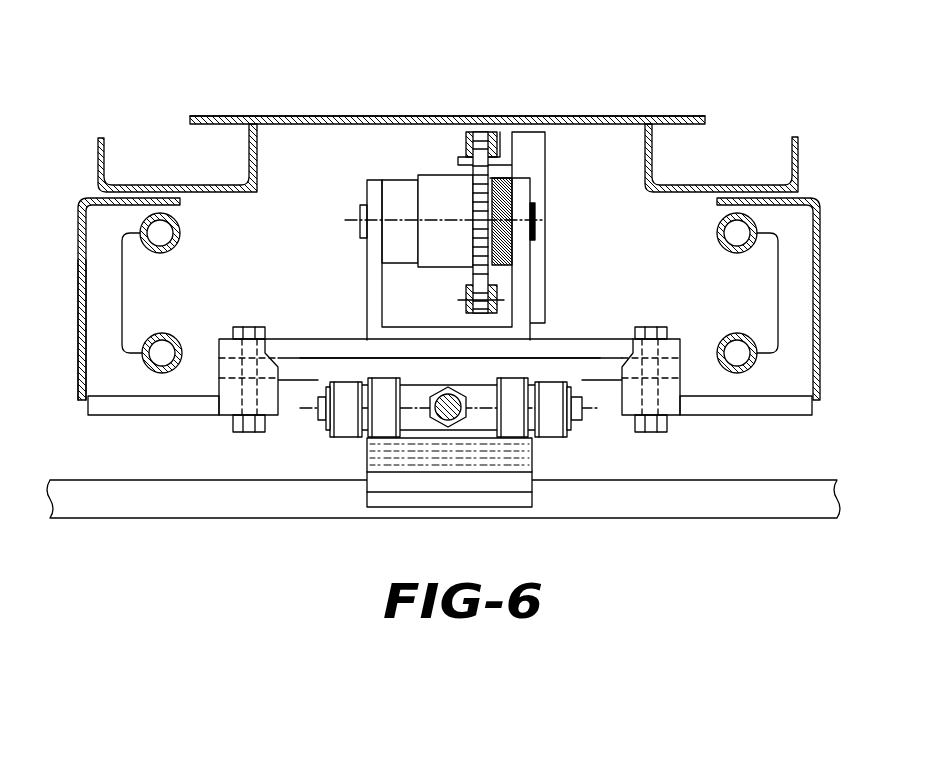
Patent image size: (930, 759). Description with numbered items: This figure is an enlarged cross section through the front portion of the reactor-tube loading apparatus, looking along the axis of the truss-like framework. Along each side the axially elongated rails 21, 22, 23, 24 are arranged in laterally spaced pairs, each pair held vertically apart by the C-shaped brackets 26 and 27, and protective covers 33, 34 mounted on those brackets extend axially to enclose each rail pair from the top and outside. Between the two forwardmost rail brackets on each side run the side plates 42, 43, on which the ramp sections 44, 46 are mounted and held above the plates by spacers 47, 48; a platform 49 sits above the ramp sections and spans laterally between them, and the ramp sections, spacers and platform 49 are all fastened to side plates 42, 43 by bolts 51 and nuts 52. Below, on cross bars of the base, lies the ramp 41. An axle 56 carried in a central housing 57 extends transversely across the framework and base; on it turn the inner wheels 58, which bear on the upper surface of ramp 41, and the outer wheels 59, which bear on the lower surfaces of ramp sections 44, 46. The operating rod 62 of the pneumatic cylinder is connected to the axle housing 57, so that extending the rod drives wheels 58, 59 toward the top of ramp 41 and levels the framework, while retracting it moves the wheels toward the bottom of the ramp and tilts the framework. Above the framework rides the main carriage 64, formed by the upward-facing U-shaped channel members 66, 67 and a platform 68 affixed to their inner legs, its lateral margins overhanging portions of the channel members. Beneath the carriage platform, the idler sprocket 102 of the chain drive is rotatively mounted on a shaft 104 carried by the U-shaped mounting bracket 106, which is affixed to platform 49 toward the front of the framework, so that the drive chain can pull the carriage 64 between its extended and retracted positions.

The rail 21 is at (177, 247).
The rail 22 is at (181, 338).
The rail 23 is at (722, 246).
The rail 24 is at (733, 334).
The C-shaped bracket 26 is at (95, 310).
The C-shaped bracket 27 is at (778, 287).
The protective cover 33 is at (78, 252).
The protective cover 34 is at (820, 268).
The ramp 41 is at (480, 484).
The side plate 42 is at (160, 412).
The side plate 43 is at (762, 405).
The ramp section 44 is at (313, 339).
The ramp section 46 is at (608, 368).
The spacer 47 is at (232, 388).
The spacer 48 is at (677, 387).
The platform 49 is at (565, 352).
The bolt 51 is at (251, 327).
The nut 52 is at (246, 426).
The axle 56 is at (320, 408).
The central housing 57 is at (418, 386).
The inner wheel 58 is at (385, 378).
The outer wheel 59 is at (345, 433).
The operating rod 62 is at (456, 397).
The main carriage 64 is at (576, 116).
The U-shaped channel member 66 is at (197, 185).
The U-shaped channel member 67 is at (726, 163).
The platform 68 is at (315, 115).
The idler sprocket 102 is at (484, 133).
The shaft 104 is at (360, 212).
The U-shaped mounting bracket 106 is at (367, 281).